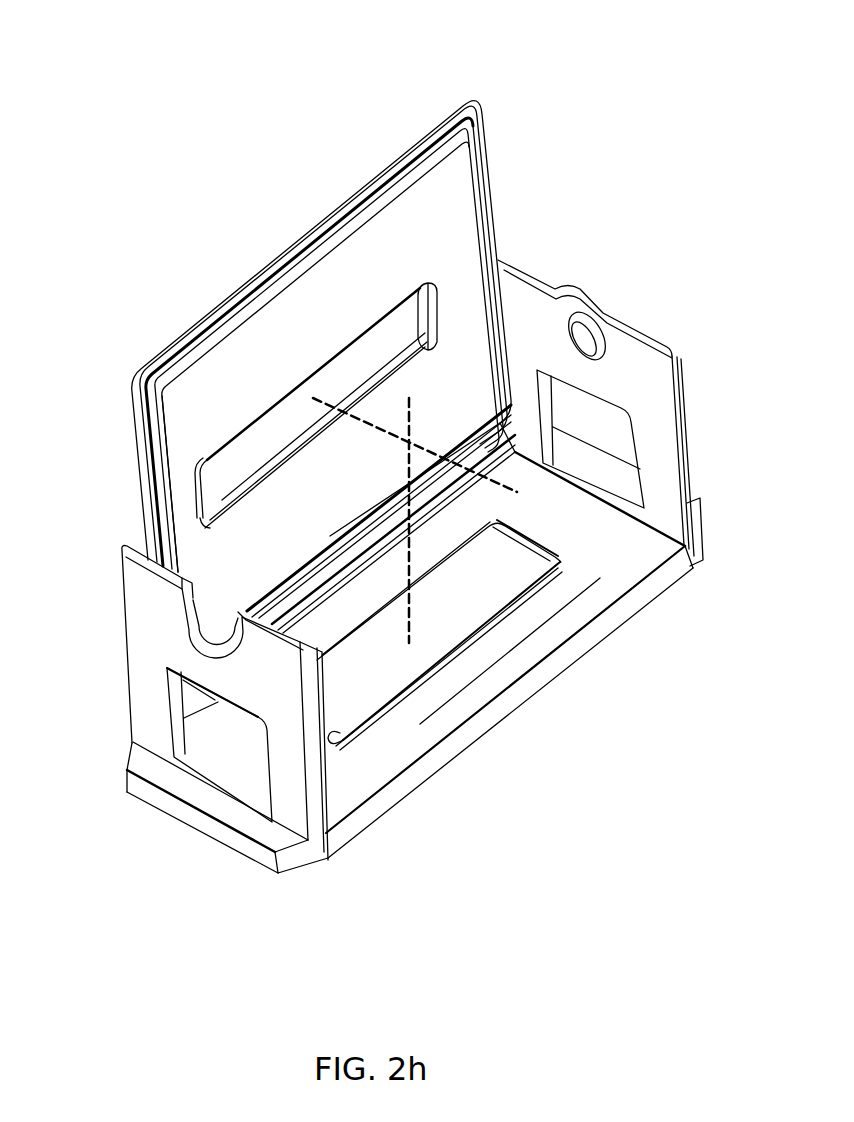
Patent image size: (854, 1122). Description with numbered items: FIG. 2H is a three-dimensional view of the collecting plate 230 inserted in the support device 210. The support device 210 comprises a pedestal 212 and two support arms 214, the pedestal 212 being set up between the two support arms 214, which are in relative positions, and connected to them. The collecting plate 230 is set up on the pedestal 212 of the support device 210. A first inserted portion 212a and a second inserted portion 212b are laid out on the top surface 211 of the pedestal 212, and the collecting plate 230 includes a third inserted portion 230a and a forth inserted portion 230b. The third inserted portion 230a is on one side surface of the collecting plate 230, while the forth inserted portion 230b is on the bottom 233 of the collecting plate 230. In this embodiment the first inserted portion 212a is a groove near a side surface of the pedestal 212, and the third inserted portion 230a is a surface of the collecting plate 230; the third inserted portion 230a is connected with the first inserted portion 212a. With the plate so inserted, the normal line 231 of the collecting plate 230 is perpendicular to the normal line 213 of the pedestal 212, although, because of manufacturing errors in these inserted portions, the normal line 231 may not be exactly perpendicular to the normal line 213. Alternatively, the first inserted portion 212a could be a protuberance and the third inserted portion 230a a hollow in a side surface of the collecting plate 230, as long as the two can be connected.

The collecting plate 230 is at (452, 124).
The third inserted portion 230a is at (305, 233).
The forth inserted portion 230b is at (397, 327).
The bottom 233 is at (452, 192).
The normal line 213 is at (413, 394).
The normal line 231 is at (512, 492).
The support device 210 is at (500, 773).
The top surface 211 is at (500, 676).
The pedestal 212 is at (400, 790).
The first inserted portion 212a is at (290, 583).
The second inserted portion 212b is at (505, 567).
The support arms 214 is at (317, 803).